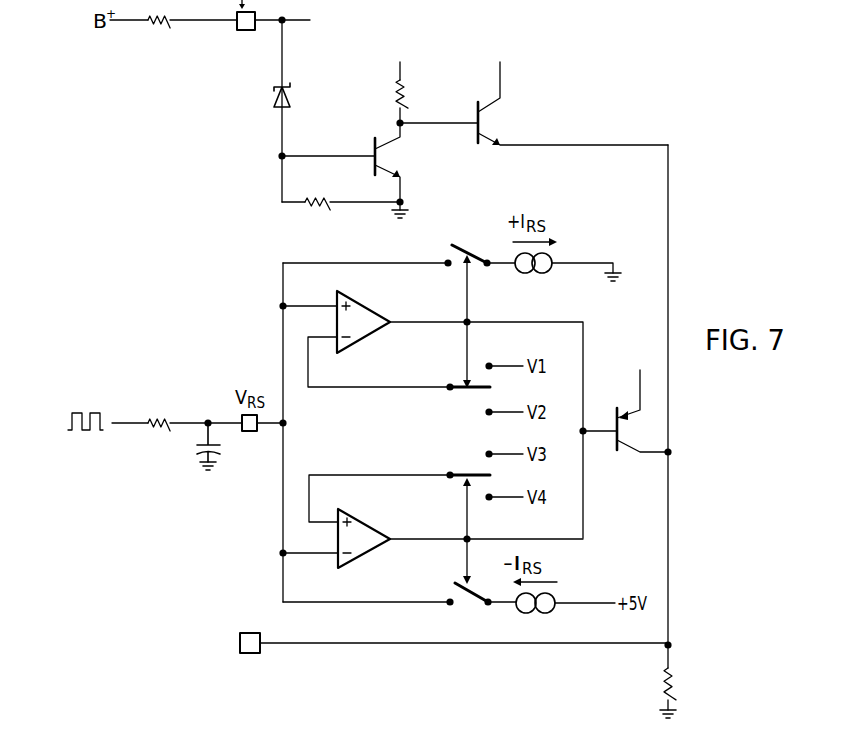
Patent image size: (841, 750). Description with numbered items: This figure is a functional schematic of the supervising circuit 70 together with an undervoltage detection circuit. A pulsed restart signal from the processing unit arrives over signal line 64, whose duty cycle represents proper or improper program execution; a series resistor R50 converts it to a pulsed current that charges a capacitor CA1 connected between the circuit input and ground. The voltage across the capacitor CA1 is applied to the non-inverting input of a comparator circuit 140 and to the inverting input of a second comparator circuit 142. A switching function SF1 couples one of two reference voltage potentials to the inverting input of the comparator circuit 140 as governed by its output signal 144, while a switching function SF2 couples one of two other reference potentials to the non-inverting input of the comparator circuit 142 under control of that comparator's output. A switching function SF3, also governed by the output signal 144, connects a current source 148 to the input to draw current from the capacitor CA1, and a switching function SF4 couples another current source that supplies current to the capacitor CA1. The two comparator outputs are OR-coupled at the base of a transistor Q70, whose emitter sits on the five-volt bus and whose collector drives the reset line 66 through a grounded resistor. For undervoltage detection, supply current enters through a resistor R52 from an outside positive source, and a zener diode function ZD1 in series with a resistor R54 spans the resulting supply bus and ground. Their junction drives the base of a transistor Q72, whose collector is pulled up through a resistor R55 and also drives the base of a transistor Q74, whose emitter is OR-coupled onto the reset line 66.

The signal line 64 is at (134, 421).
The reset line 66 is at (420, 636).
The supervising circuit 70 is at (368, 441).
The comparator circuit 140 is at (362, 300).
The comparator circuit 142 is at (350, 514).
The output signal 144 is at (527, 320).
The current source 148 is at (550, 258).
The resistor R52 is at (171, 36).
The resistor R54 is at (318, 208).
The resistor R55 is at (393, 95).
The resistor R50 is at (167, 395).
The zener diode function ZD1 is at (296, 95).
The transistor Q72 is at (387, 133).
The transistor Q74 is at (490, 96).
The transistor Q70 is at (627, 402).
The capacitor CA1 is at (197, 448).
The switching function SF1 is at (454, 382).
The switching function SF2 is at (460, 470).
The switching function SF3 is at (442, 246).
The switching function SF4 is at (461, 605).